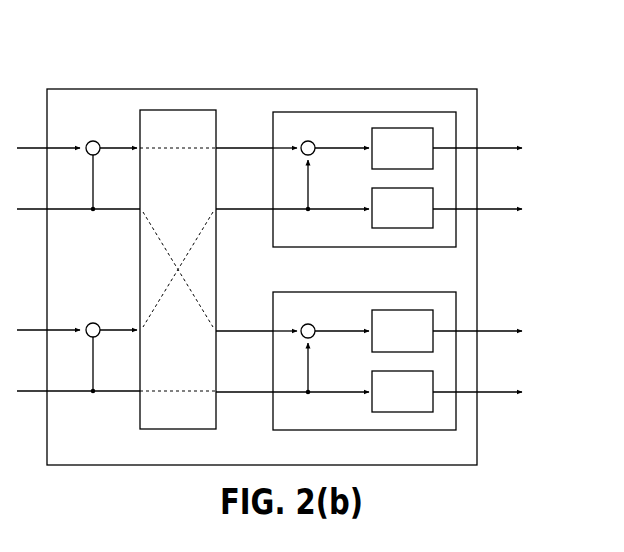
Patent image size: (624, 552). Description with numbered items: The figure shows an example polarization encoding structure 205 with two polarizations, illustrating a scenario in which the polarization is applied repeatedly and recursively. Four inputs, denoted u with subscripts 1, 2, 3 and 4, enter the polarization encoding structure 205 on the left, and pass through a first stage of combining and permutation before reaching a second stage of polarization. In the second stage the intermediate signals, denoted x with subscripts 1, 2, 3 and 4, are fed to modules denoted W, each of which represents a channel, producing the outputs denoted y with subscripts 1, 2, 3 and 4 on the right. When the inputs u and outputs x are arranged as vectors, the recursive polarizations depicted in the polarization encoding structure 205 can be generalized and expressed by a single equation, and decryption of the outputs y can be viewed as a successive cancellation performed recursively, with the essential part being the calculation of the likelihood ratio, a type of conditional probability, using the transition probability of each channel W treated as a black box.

The polarization encoding structure 205 is at (159, 57).
The first signal channel (u1, x1, y1) 1 is at (264, 140).
The second signal channel (u2, x2, y2) 2 is at (264, 201).
The third signal channel (u3, x3, y3) 3 is at (264, 323).
The fourth signal channel (u4, x4, y4) 4 is at (264, 384).